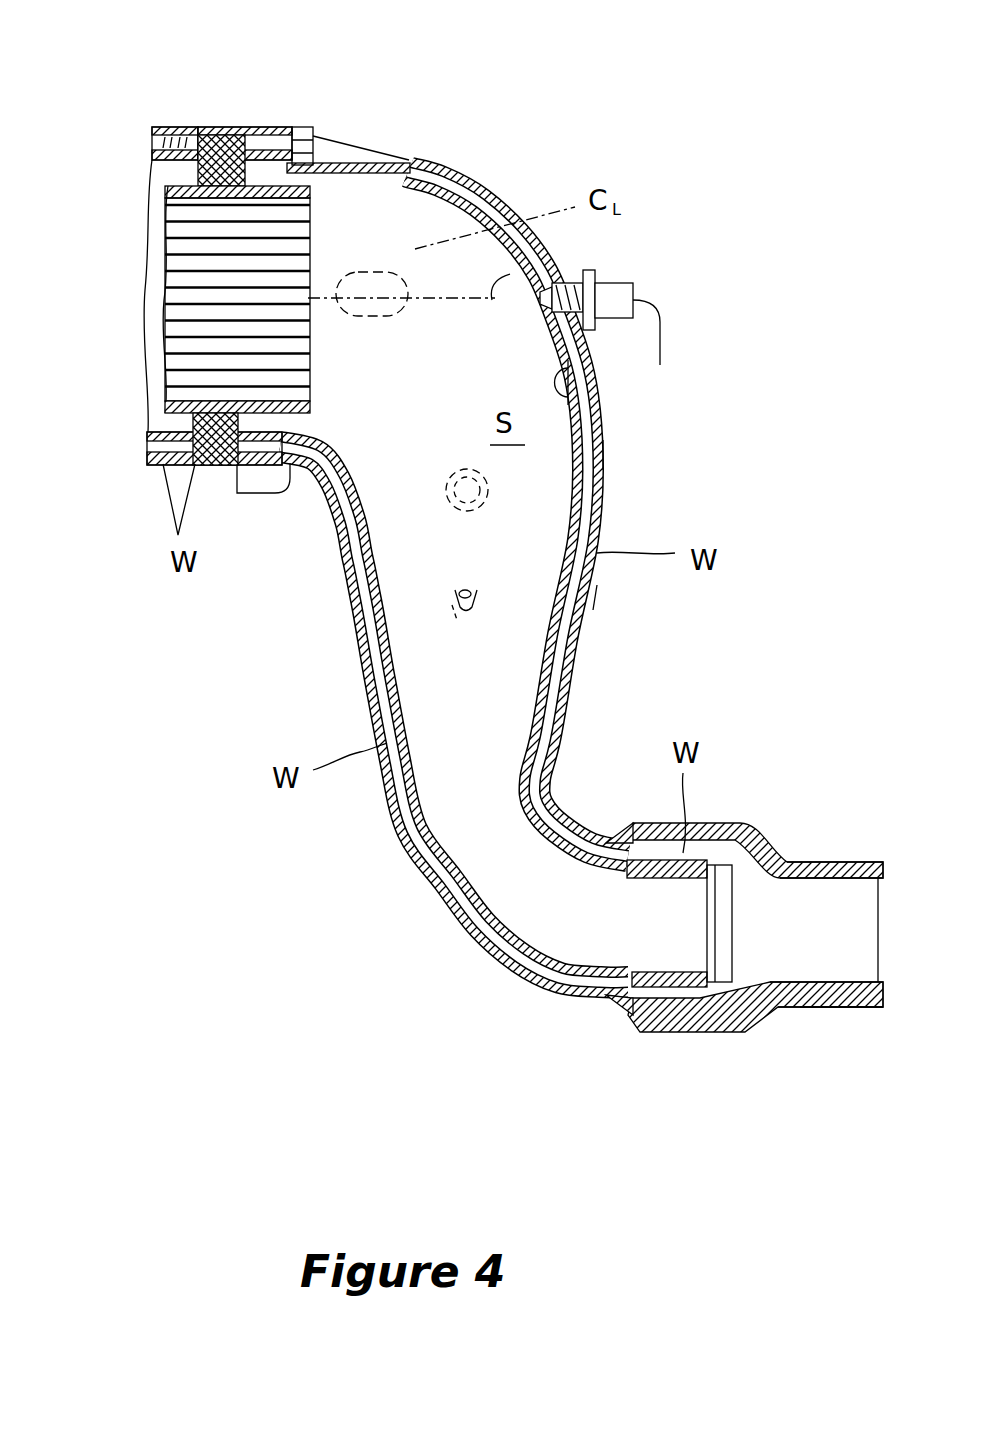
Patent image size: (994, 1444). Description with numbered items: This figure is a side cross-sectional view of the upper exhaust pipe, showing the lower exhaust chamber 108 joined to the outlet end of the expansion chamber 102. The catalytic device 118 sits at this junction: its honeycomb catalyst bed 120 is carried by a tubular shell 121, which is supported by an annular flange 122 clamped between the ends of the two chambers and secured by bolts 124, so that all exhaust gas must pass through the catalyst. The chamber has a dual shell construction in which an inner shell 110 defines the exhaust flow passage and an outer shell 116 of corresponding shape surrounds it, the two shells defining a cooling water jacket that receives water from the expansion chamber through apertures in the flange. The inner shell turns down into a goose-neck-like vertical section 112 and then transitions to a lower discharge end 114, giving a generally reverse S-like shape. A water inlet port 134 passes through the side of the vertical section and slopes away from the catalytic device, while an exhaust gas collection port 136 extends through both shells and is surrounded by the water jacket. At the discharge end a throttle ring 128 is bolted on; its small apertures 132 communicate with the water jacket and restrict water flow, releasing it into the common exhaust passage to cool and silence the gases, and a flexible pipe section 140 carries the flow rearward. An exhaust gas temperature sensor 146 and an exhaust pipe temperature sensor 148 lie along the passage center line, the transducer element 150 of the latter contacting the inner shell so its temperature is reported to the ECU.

The expansion chamber 102 is at (177, 127).
The annular flange 122 is at (223, 127).
The bolts 124 is at (284, 143).
The lower exhaust chamber 108 is at (444, 164).
The exhaust gas temperature sensor 146 is at (460, 230).
The exhaust pipe temperature sensor 148 is at (620, 283).
The transducer element 150 is at (512, 312).
The catalytic device 118 is at (238, 303).
The catalyst bed 120 is at (287, 247).
The tubular shell 121 is at (310, 408).
The inner shell 110 is at (569, 398).
The outer shell 116 is at (606, 455).
The vertical section 112 is at (605, 600).
The exhaust gas collection port 136 is at (447, 497).
The water inlet port 134 is at (475, 612).
The apertures 132 is at (693, 848).
The throttle ring 128 is at (735, 905).
The lower discharge end 114 is at (680, 1030).
The flexible pipe section 140 is at (850, 1007).